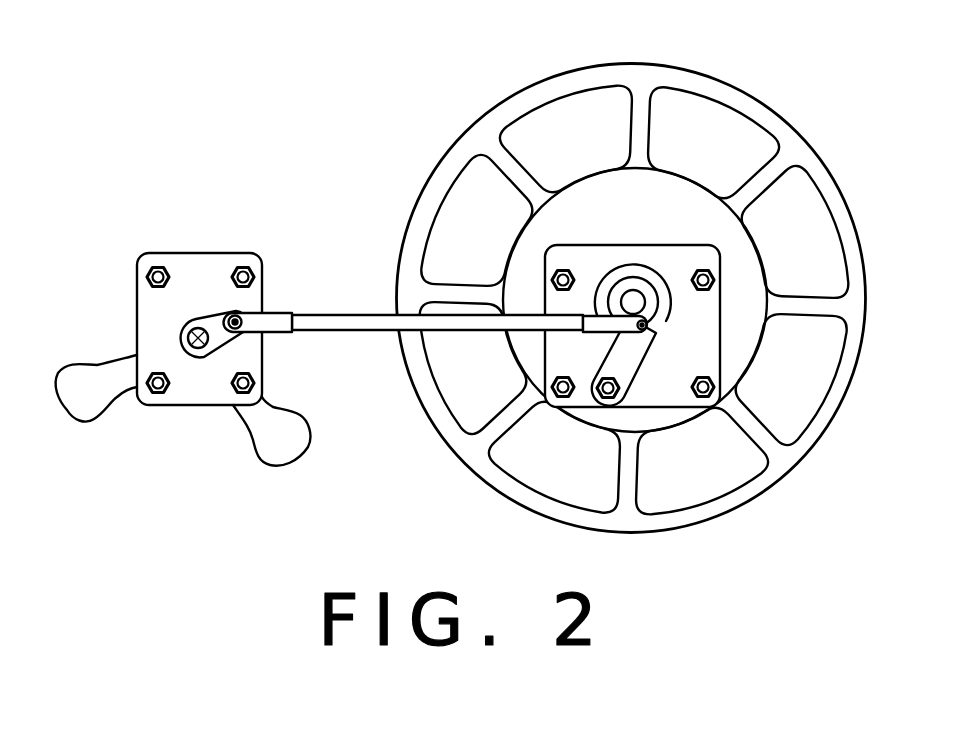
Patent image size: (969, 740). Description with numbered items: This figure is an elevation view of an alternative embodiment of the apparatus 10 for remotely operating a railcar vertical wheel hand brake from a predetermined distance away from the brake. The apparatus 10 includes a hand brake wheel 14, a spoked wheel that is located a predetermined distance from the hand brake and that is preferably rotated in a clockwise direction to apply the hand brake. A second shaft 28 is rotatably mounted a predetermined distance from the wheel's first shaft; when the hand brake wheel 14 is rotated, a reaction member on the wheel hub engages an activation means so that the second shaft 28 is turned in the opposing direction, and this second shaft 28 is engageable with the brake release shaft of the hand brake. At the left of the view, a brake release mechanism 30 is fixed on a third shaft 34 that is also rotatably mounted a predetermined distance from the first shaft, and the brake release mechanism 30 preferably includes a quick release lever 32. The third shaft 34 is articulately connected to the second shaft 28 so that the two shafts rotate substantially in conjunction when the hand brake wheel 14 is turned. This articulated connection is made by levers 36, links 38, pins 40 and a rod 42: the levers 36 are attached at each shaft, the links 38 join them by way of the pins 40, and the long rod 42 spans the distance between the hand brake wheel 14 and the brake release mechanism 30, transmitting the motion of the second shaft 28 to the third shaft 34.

The apparatus 10 is at (436, 60).
The hand brake wheel 14 is at (658, 66).
The second shaft 28 is at (602, 395).
The brake release mechanism 30 is at (199, 224).
The quick release lever 32 is at (290, 440).
The third shaft 34 is at (197, 353).
The levers 36 is at (213, 323).
The links 38 is at (275, 313).
The pins 40 is at (235, 325).
The rod 42 is at (380, 327).